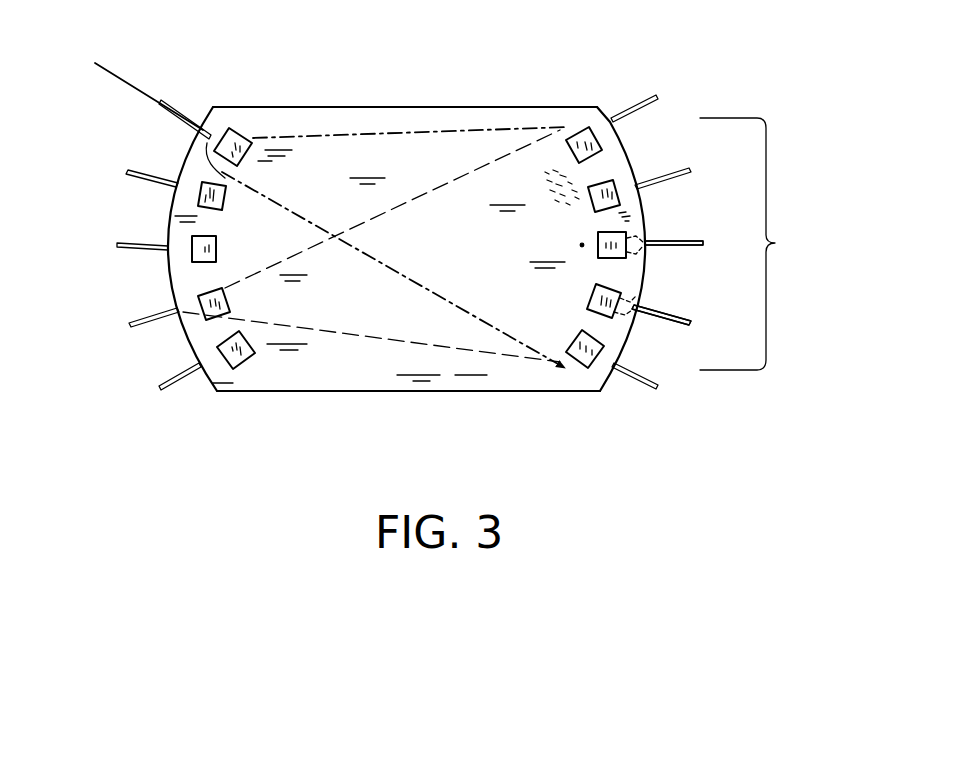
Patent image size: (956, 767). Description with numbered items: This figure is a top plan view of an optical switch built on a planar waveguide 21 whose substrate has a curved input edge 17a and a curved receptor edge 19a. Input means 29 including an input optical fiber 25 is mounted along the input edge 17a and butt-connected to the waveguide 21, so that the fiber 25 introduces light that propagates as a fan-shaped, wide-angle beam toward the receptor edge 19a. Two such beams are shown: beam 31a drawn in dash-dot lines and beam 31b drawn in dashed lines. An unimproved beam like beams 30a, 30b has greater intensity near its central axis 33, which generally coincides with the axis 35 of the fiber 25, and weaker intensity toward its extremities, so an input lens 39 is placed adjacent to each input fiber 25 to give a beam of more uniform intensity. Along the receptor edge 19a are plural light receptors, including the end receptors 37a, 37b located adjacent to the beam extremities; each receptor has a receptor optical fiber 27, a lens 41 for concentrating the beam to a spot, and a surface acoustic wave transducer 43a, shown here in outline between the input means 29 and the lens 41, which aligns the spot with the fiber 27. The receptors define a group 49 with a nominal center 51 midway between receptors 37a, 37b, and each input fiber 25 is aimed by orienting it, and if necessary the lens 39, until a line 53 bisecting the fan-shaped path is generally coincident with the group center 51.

The input edge 17a is at (170, 278).
The receptor edge 19a is at (643, 215).
The waveguide 21 is at (407, 377).
The input optical fiber 25 is at (172, 170).
The receptor optical fiber 27 is at (660, 307).
The input means 29 is at (172, 328).
The unimproved light beam 30a is at (393, 270).
The unimproved light beam 30b is at (193, 317).
The light beam 31a is at (358, 148).
The light beam 31b is at (350, 317).
The central axis 33 is at (213, 130).
The fiber axis 35 is at (112, 72).
The receptor 37a is at (607, 400).
The receptor 37b is at (612, 80).
The input lens 39 is at (230, 132).
The lens 41 is at (597, 353).
The transducer 43a is at (578, 187).
The group 49 is at (775, 243).
The group center 51 is at (582, 245).
The bisecting line 53 is at (445, 232).